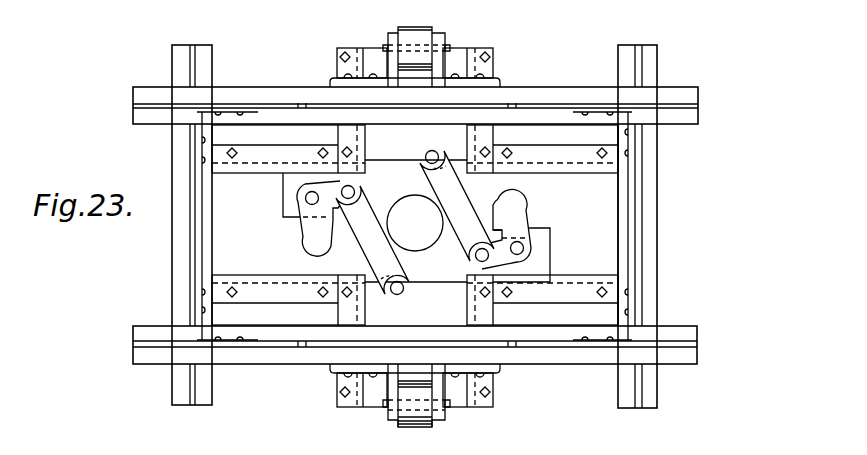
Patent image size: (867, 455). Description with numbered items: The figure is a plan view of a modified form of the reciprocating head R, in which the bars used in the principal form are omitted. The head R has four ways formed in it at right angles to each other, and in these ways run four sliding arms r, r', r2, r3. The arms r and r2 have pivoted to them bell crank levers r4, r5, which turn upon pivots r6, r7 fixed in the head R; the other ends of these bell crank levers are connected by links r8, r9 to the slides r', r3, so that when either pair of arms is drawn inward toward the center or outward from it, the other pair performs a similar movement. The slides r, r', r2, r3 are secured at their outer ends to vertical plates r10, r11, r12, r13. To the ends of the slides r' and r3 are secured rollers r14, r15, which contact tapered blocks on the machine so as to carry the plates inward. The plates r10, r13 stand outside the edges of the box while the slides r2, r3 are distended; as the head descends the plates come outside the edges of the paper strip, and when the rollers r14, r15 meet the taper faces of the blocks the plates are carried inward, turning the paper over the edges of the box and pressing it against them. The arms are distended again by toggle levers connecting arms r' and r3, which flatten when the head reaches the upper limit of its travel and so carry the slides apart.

The reciprocating head R is at (653, 207).
The sliding arm r is at (623, 226).
The sliding arm r' is at (415, 225).
The sliding arm r2 is at (220, 205).
The sliding arm r3 is at (423, 290).
The bell crank lever r4 is at (524, 225).
The bell crank lever r5 is at (300, 224).
The pivot r6 is at (524, 247).
The pivot r7 is at (304, 195).
The link r8 is at (460, 198).
The link r9 is at (360, 235).
The vertical plate r10 is at (642, 185).
The vertical plate r11 is at (491, 102).
The vertical plate r12 is at (188, 245).
The vertical plate r13 is at (278, 348).
The roller r14 is at (433, 33).
The roller r15 is at (415, 404).